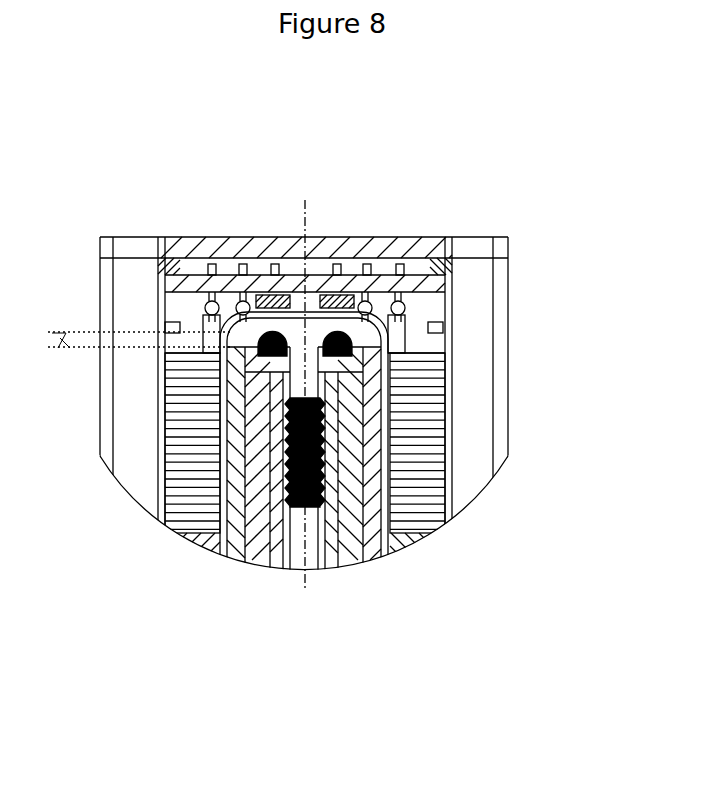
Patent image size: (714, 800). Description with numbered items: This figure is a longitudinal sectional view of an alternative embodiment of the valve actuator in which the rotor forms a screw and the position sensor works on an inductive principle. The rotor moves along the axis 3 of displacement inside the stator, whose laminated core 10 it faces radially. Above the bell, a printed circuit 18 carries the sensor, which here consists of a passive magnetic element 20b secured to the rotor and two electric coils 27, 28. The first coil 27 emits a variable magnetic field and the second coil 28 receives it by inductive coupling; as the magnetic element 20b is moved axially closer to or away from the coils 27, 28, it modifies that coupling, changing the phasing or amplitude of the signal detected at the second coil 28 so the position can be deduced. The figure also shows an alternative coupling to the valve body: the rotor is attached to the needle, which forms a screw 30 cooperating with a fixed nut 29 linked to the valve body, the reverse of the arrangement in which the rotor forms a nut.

The axis of displacement 3 is at (304, 208).
The printed circuit 18 is at (208, 282).
The second coil 28 is at (343, 292).
The first coil 27 is at (368, 293).
The passive magnetic element 20b is at (355, 338).
The laminated core 10 is at (410, 427).
The fixed nut 29 is at (328, 540).
The screw 30 is at (308, 548).